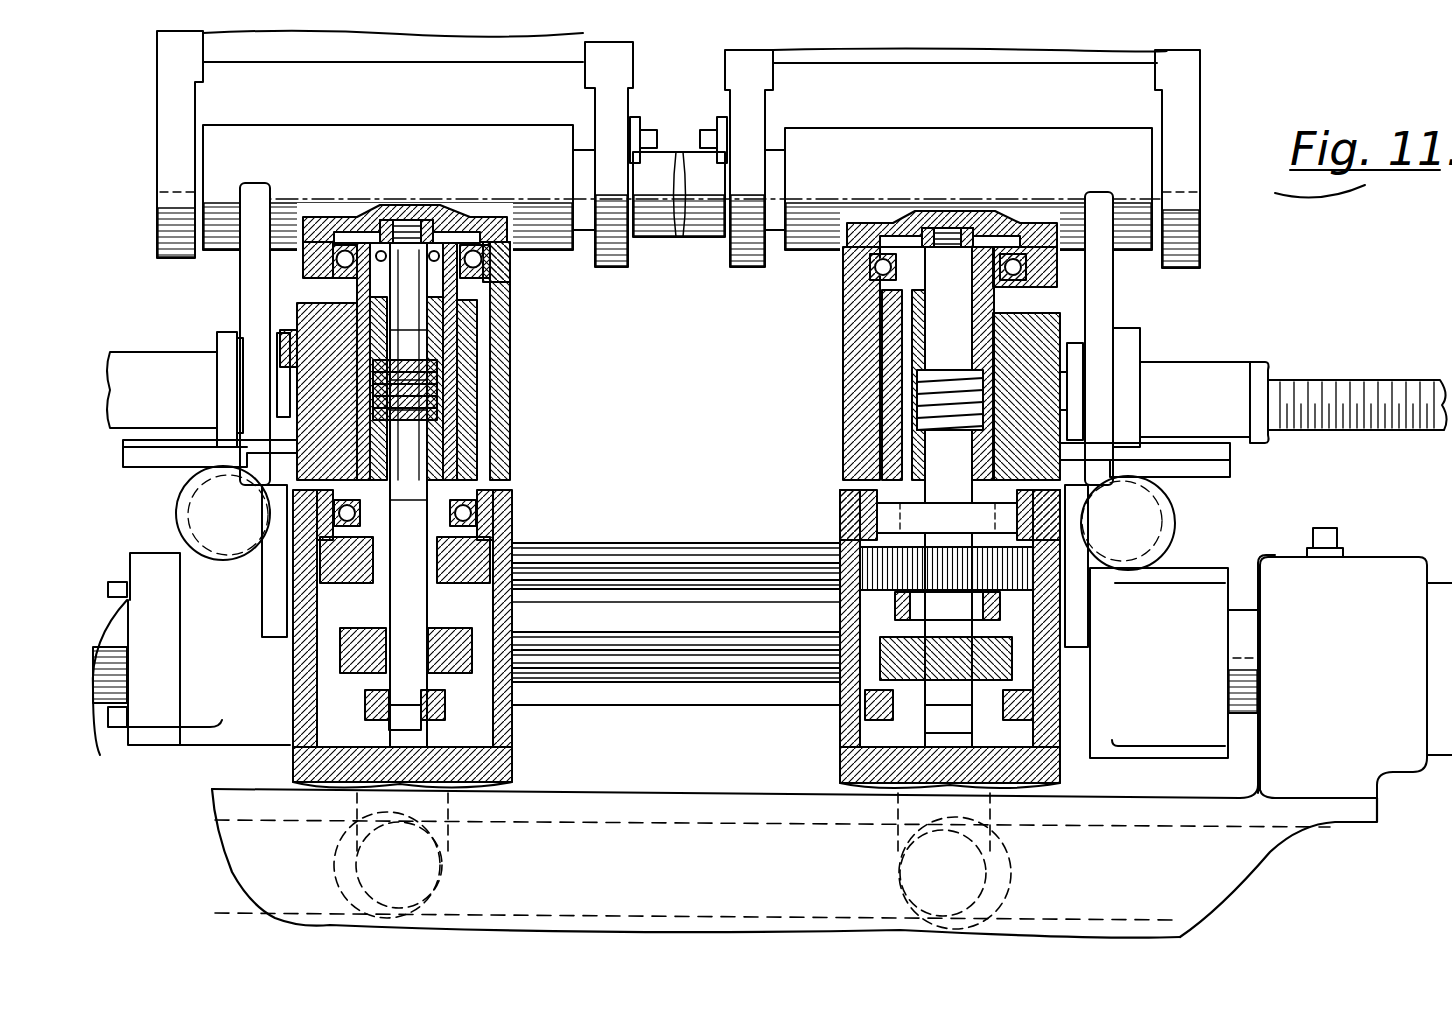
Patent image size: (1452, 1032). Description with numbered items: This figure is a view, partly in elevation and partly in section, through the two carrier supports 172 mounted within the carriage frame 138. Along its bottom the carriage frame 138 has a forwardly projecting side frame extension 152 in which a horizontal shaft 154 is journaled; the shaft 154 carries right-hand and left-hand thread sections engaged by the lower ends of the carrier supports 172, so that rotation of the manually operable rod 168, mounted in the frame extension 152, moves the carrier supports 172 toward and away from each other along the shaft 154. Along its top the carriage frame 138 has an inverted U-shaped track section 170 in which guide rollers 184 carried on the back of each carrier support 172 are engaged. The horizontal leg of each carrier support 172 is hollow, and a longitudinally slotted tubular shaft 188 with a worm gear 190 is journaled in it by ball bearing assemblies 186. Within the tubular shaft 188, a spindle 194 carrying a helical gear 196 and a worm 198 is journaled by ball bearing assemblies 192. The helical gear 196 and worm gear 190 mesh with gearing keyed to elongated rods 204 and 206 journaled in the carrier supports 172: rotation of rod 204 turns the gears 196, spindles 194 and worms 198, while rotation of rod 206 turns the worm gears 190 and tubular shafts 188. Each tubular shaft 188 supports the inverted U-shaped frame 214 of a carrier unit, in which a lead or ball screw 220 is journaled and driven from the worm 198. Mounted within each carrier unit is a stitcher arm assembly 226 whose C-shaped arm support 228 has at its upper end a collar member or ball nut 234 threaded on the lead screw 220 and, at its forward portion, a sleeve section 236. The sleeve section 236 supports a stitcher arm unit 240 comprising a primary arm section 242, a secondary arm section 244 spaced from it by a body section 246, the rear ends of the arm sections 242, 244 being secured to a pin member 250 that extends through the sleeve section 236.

The carriage frame 138 is at (232, 790).
The side frame extension 152 is at (1402, 570).
The horizontal shaft 154 is at (755, 703).
The manually operable rod 168 is at (1330, 528).
The track section 170 is at (628, 820).
The carrier support 172 is at (505, 440).
The guide roller 184 is at (458, 868).
The ball bearing assemblies 186 is at (485, 265).
The tubular shaft 188 is at (455, 352).
The worm gear 190 is at (512, 558).
The ball bearing assemblies 192 is at (452, 228).
The spindle 194 is at (420, 534).
The helical gear 196 is at (347, 648).
The worm 198 is at (437, 404).
The elongated rod 204 is at (767, 622).
The elongated rod 206 is at (713, 556).
The frame 214 is at (458, 392).
The lead or ball screw 220 is at (1318, 390).
The stitcher arm assembly 226 is at (192, 268).
The arm support 228 is at (248, 286).
The collar member or ball nut 234 is at (172, 342).
The sleeve section 236 is at (402, 135).
The stitcher arm unit 240 is at (156, 80).
The primary arm section 242 is at (613, 257).
The secondary arm section 244 is at (162, 158).
The body section 246 is at (293, 50).
The pin member 250 is at (702, 228).